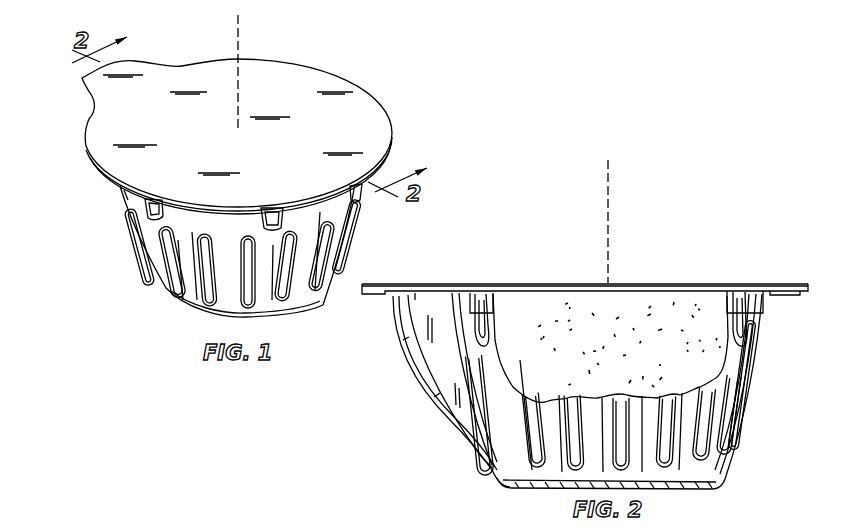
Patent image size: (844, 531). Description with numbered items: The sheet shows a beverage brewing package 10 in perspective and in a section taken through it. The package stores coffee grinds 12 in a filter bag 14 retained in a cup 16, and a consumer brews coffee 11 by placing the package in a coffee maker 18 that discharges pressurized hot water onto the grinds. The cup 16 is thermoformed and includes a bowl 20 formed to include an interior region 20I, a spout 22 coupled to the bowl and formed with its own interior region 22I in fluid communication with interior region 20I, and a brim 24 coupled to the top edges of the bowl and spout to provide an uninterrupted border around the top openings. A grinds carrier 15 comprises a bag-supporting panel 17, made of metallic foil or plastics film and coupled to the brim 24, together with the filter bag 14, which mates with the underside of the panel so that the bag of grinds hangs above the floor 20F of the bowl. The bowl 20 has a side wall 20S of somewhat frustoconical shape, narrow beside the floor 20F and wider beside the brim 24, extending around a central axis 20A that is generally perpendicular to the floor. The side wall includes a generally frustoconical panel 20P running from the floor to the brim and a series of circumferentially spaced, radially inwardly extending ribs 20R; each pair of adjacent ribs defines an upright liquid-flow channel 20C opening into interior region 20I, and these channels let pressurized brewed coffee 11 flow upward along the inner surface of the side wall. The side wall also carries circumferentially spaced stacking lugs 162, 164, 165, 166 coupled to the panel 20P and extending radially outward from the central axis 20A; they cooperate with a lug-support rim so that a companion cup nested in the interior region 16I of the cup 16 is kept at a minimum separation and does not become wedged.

In FIG. 1, the beverage brewing package 10 is at (373, 67).
In FIG. 2, the beverage brewing package 10 is at (665, 228).
In FIG. 2, the coffee 11 is at (354, 523).
In FIG. 2, the coffee grinds 12 is at (645, 316).
In FIG. 1, the filter bag 14 is at (277, 108).
In FIG. 2, the filter bag 14 is at (697, 397).
In FIG. 1, the grinds carrier 15 is at (285, 25).
In FIG. 2, the grinds carrier 15 is at (780, 405).
In FIG. 1, the cup 16 is at (145, 268).
In FIG. 2, the cup 16 is at (372, 440).
In FIG. 2, the interior region of the cup 16I is at (640, 437).
In FIG. 1, the bag-supporting panel 17 is at (253, 88).
In FIG. 2, the bag-supporting panel 17 is at (698, 283).
In FIG. 2, the coffee maker 18 is at (742, 528).
In FIG. 1, the bowl 20 is at (133, 237).
In FIG. 2, the bowl 20 is at (487, 473).
In FIG. 1, the central axis 20A is at (236, 45).
In FIG. 2, the central axis 20A is at (605, 193).
In FIG. 2, the liquid-flow channels 20C is at (597, 418).
In FIG. 2, the floor 20F is at (525, 466).
In FIG. 2, the interior region of the bowl 20I is at (693, 440).
In FIG. 1, the frustoconical panel 20P is at (293, 277).
In FIG. 1, the ribs 20R is at (175, 277).
In FIG. 2, the side wall 20S is at (752, 388).
In FIG. 2, the spout 22 is at (410, 378).
In FIG. 2, the interior region of the spout 22I is at (428, 310).
In FIG. 1, the brim 24 is at (392, 128).
In FIG. 2, the brim 24 is at (778, 294).
In FIG. 2, the stacking lug 162 is at (458, 305).
In FIG. 1, the stacking lug 164 is at (140, 217).
In FIG. 1, the stacking lug 165 is at (253, 226).
In FIG. 1, the stacking lug 166 is at (360, 187).
In FIG. 2, the stacking lug 166 is at (752, 300).